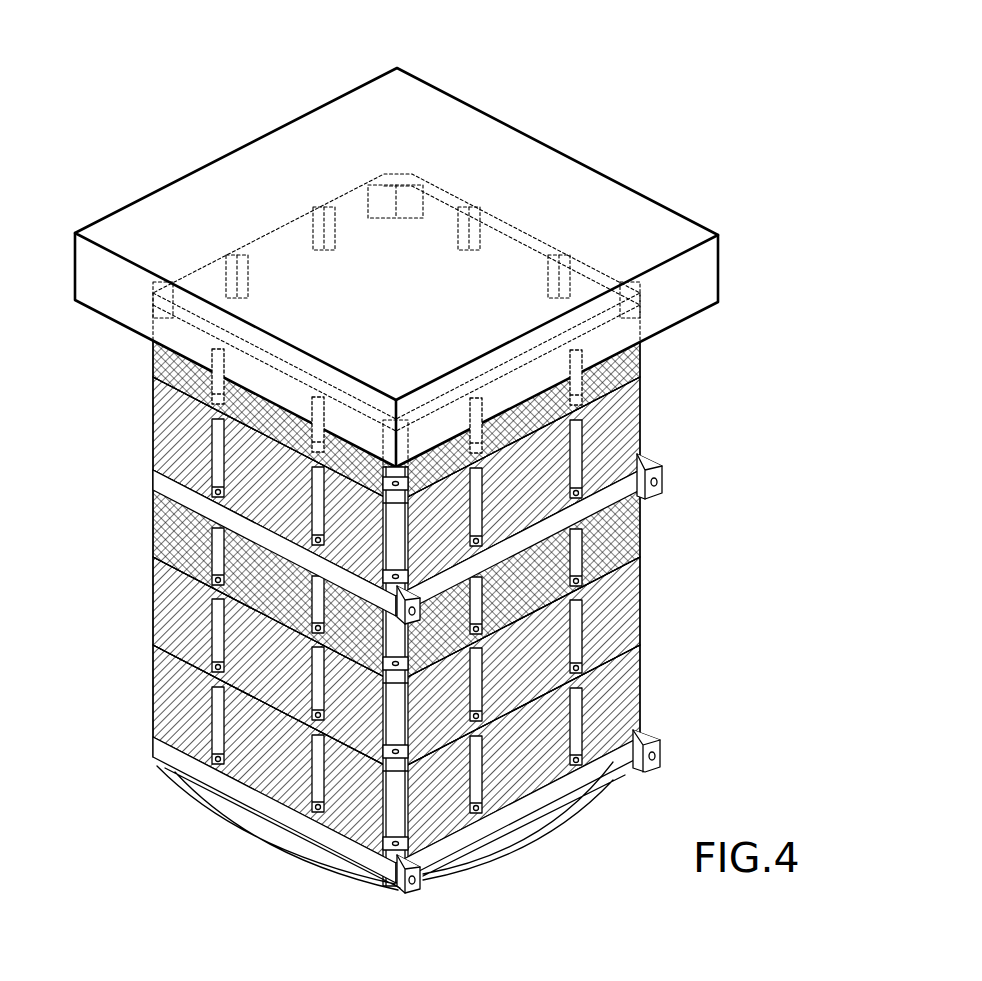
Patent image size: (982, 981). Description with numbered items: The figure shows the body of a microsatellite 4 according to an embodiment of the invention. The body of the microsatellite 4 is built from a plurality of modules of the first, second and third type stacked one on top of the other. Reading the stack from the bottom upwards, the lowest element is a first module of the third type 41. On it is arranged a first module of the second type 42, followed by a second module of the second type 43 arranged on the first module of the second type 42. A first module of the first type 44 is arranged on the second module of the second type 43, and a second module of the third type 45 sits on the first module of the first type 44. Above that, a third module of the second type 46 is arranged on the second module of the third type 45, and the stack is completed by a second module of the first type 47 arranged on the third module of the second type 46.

The body of a microsatellite 4 is at (607, 140).
The first module of the third type 41 is at (618, 770).
The first module of the second type 42 is at (627, 687).
The second module of the second type 43 is at (623, 610).
The first module of the first type 44 is at (627, 533).
The second module of the third type 45 is at (647, 450).
The third module of the second type 46 is at (640, 418).
The second module of the first type 47 is at (630, 363).